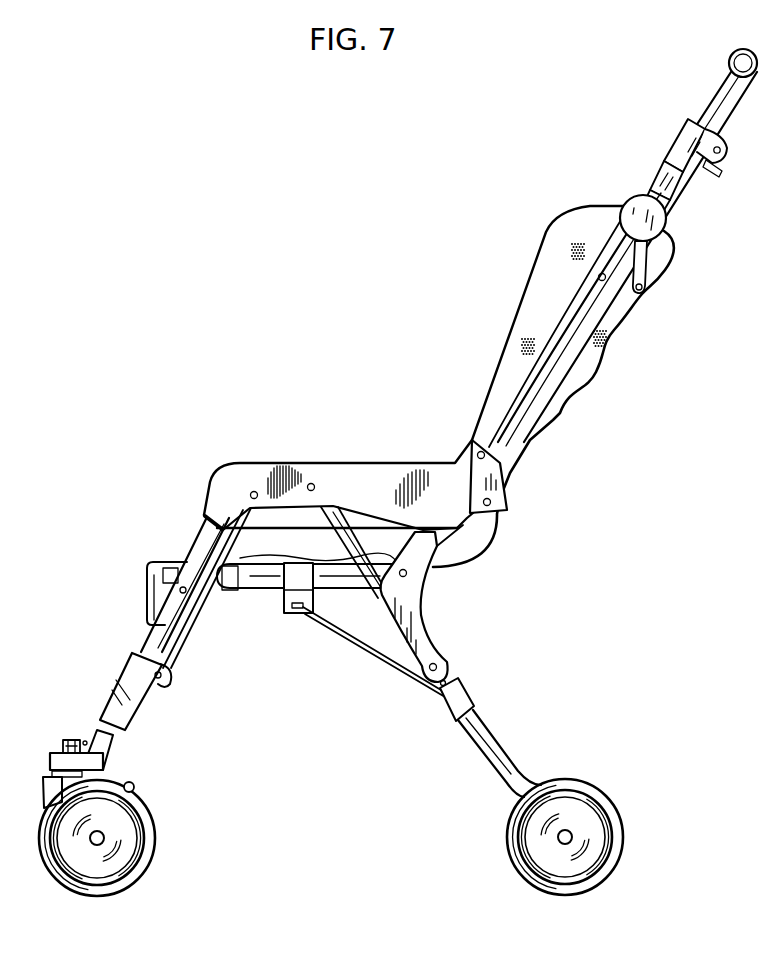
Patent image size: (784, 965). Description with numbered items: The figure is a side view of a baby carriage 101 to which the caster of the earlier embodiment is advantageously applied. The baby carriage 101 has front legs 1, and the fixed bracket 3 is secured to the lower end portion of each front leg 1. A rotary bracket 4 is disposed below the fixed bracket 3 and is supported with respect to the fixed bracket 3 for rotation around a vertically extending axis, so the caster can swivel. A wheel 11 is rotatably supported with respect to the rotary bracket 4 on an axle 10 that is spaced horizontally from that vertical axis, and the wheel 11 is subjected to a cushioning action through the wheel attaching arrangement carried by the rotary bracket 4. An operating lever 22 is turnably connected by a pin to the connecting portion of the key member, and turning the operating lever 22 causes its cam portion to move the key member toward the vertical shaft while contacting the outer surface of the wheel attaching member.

The baby carriage 101 is at (357, 440).
The front leg 1 is at (148, 642).
The fixed bracket 3 is at (53, 753).
The rotary bracket 4 is at (46, 788).
The operating lever 22 is at (132, 782).
The wheel 11 is at (153, 813).
The axle 10 is at (106, 836).